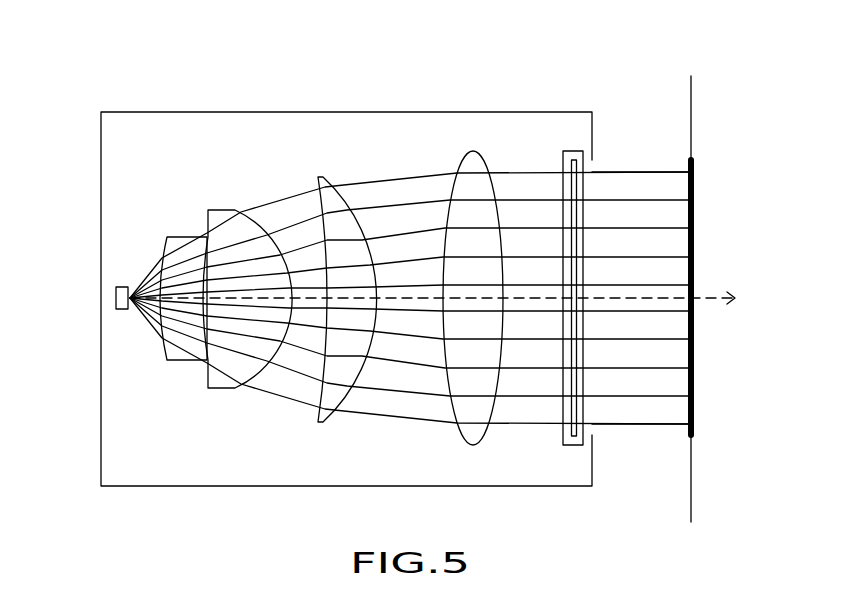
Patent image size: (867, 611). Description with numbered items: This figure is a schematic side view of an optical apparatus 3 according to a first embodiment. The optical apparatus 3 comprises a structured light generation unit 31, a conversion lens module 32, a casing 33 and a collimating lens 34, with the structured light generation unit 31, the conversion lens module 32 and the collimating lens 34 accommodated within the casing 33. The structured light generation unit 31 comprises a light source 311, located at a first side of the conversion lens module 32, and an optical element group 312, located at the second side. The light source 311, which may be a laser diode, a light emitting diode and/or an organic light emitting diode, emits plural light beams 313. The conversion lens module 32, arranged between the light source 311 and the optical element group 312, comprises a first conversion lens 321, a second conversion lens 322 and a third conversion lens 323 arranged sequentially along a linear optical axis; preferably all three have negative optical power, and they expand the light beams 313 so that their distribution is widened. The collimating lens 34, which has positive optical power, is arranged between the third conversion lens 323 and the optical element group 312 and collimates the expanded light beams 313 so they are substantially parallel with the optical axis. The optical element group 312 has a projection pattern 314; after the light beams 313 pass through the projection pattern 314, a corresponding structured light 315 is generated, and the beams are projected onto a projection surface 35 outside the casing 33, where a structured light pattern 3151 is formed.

The optical apparatus 3 is at (141, 55).
The structured light generation unit 31 is at (320, 15).
The light source 311 is at (90, 264).
The optical element group 312 is at (570, 163).
The light beams 313 is at (268, 374).
The projection pattern 314 is at (572, 412).
The structured light 315 is at (638, 172).
The structured light pattern 3151 is at (687, 430).
The conversion lens module 32 is at (440, 8).
The first conversion lens 321 is at (165, 209).
The second conversion lens 322 is at (198, 182).
The third conversion lens 323 is at (292, 147).
The casing 33 is at (252, 123).
The collimating lens 34 is at (465, 169).
The projection surface 35 is at (693, 110).